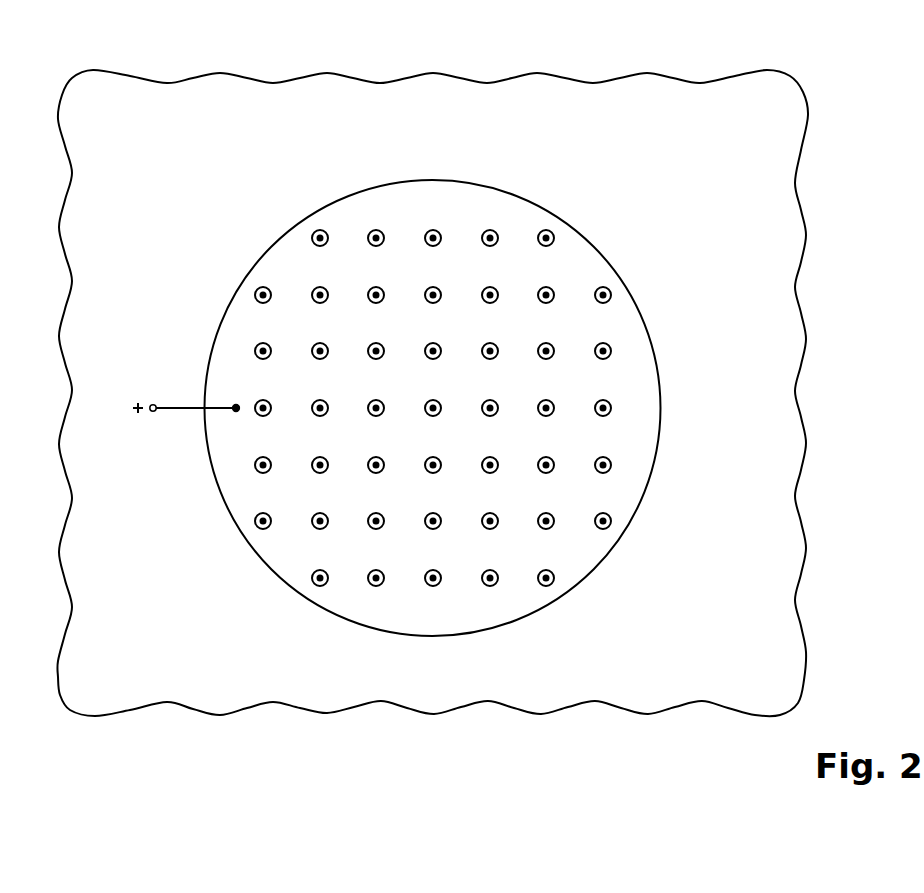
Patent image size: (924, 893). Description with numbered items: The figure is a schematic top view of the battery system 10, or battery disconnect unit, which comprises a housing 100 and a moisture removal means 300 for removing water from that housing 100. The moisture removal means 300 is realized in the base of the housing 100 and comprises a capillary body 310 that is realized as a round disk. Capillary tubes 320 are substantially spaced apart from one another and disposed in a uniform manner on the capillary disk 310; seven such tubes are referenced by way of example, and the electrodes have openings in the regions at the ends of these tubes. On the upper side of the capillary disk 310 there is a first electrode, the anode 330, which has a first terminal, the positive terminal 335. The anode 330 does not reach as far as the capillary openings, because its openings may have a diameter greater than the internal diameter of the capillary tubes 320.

The battery system 10 is at (415, 53).
The housing 100 is at (785, 552).
The moisture removal means 300 is at (430, 122).
The first electrode 330 is at (243, 494).
The capillary body 310 is at (604, 415).
The capillary tubes 320 is at (676, 408).
The first terminal 335 is at (153, 404).